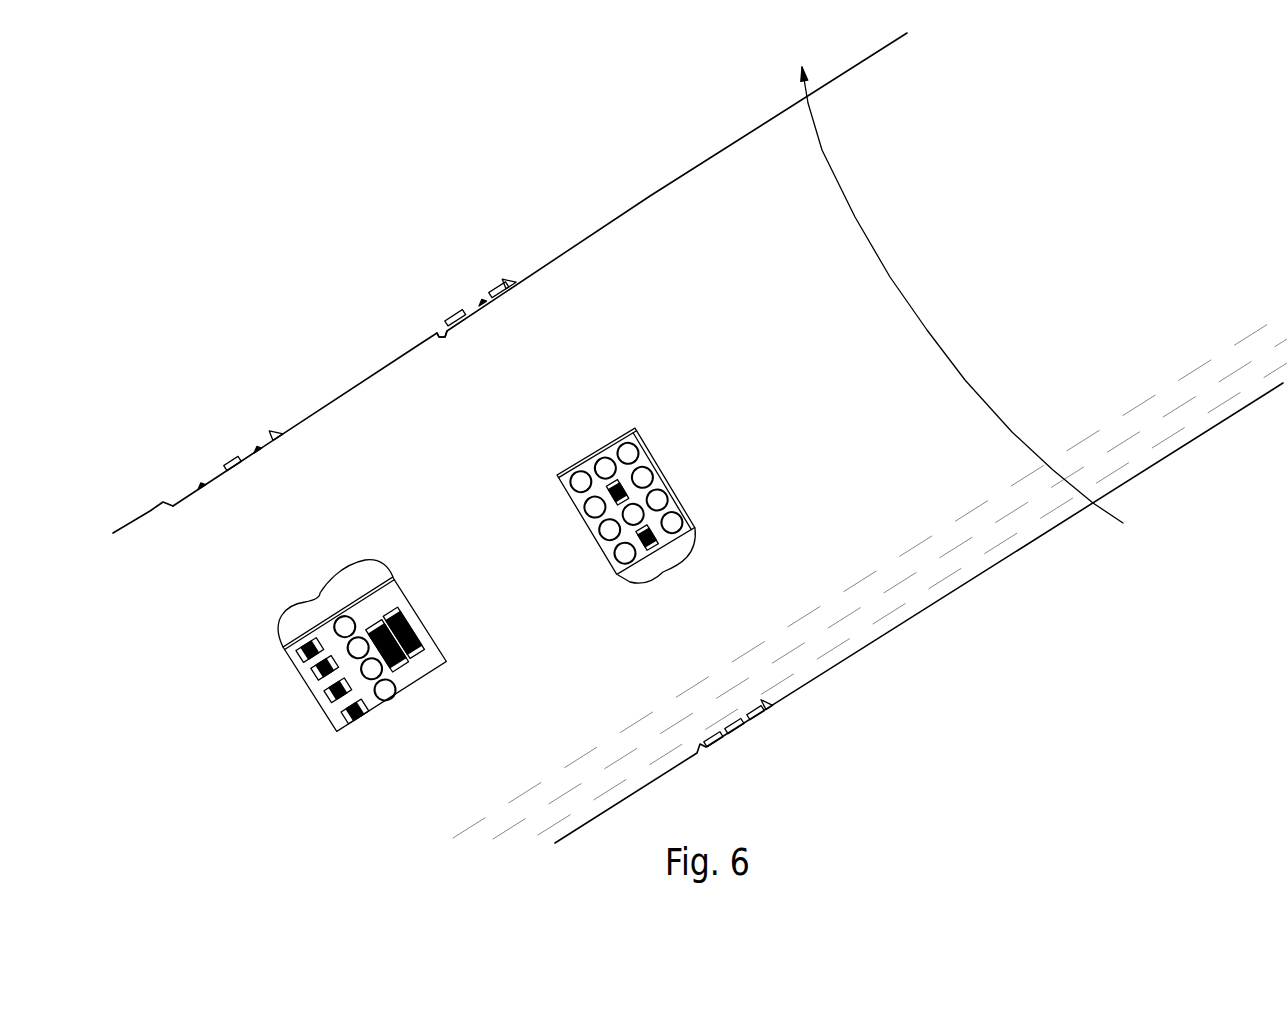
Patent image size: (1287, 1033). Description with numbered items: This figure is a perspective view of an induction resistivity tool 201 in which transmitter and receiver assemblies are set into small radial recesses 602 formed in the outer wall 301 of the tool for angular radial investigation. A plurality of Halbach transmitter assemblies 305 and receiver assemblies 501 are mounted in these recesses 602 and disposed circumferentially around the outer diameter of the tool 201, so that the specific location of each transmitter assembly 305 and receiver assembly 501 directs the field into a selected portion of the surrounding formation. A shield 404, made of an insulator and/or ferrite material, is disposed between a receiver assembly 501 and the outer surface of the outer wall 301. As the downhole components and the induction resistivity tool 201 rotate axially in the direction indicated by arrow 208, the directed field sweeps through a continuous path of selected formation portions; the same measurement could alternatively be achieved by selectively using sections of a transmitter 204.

The induction resistivity tool 201 is at (650, 195).
The transmitter 204 is at (690, 448).
The arrow 208 is at (1012, 433).
The outer wall 301 is at (160, 537).
The transmitter assembly 305 is at (470, 293).
The shield 404 is at (332, 713).
The receiver assembly 501 is at (228, 442).
The radial recess 602 is at (441, 330).